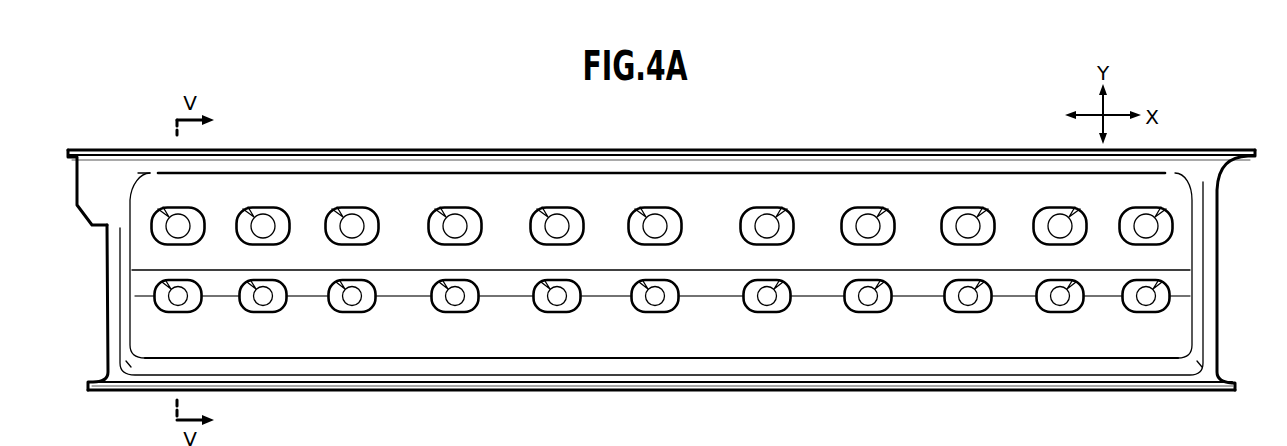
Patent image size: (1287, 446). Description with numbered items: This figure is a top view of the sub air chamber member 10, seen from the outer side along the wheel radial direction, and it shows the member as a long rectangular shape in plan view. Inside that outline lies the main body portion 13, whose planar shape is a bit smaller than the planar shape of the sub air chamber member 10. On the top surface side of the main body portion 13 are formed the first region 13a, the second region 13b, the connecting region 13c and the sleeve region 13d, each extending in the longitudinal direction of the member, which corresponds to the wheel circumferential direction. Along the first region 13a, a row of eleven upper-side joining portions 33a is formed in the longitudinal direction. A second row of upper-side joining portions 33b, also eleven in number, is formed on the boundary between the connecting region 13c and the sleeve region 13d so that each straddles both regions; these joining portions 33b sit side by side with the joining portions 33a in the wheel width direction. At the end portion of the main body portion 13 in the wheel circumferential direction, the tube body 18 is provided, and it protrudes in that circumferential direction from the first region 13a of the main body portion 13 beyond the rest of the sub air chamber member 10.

The sub air chamber member 10 is at (944, 128).
The tube body 18 is at (103, 165).
The main body portion 13 is at (305, 192).
The first region 13a is at (407, 202).
The connecting region 13c is at (498, 283).
The second region 13b is at (505, 332).
The sleeve region 13d is at (713, 331).
The upper-side joining portions 33a is at (953, 215).
The upper-side joining portions 33b is at (780, 308).